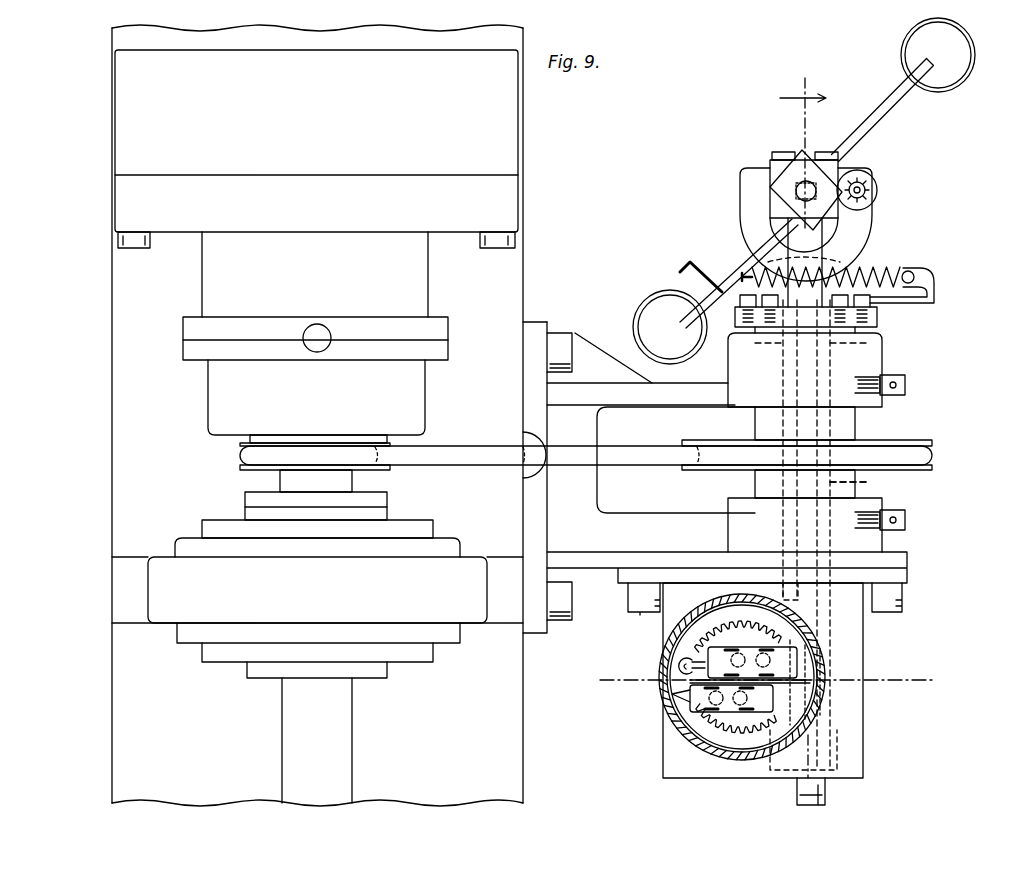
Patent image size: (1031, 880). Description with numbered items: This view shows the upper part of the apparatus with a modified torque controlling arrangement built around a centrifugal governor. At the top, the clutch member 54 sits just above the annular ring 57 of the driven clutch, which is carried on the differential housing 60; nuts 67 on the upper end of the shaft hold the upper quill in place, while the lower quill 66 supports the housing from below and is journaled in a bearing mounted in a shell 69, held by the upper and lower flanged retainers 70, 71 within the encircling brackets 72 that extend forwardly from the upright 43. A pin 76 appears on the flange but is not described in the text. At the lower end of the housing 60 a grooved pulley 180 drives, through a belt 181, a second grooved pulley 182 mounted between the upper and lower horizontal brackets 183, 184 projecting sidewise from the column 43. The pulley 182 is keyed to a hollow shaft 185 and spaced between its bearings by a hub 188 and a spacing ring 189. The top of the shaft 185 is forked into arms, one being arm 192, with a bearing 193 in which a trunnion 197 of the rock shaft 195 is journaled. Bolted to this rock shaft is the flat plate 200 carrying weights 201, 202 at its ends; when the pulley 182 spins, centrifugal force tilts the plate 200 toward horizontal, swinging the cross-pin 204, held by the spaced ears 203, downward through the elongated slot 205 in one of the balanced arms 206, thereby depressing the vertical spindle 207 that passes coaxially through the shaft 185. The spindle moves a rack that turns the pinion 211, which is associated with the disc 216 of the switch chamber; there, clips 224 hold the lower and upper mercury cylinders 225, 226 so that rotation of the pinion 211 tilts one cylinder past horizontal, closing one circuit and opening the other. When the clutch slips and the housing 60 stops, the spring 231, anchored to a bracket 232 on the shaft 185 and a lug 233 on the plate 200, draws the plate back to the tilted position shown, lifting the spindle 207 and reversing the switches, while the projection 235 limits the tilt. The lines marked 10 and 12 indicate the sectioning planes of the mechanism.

The section line 10- 10 is at (762, 680).
The section line 12- 12 is at (803, 417).
The upright 43 is at (122, 103).
The clutch member 54 is at (122, 101).
The annular plate or ring 57 is at (122, 209).
The differential housing 60 is at (425, 401).
The lower quill 66 is at (338, 750).
The nuts 67 is at (428, 287).
The shell 69 is at (317, 590).
The upper flanged retainer 70 is at (210, 524).
The lower flanged retainer 71 is at (258, 678).
The encircling arms or brackets 72 is at (138, 568).
The pin 76 is at (318, 326).
The grooved pulley 180 is at (388, 470).
The belt 181 is at (500, 452).
The grooved pulley 182 is at (930, 468).
The upper horizontal bracket 183 is at (790, 372).
The lower horizontal bracket 184 is at (785, 550).
The hollow shaft 185 is at (862, 483).
The hub 188 is at (855, 423).
The spacing ring 189 is at (757, 483).
The arm 192 is at (822, 258).
The bearing 193 is at (770, 160).
The rock shaft 195 is at (822, 158).
The trunnion 197 is at (796, 150).
The flat wing or plate 200 is at (892, 108).
The weight 201 is at (633, 321).
The weight 202 is at (968, 73).
The spaced ears 203 is at (875, 185).
The cross-pin 204 is at (860, 186).
The horizontally elongated slot 205 is at (866, 192).
The balanced arms 206 is at (740, 193).
The vertical spindle 207 is at (882, 343).
The pinion 211 is at (752, 723).
The disc 216 is at (690, 722).
The clips 224 is at (768, 645).
The lower cylinder 225 is at (680, 692).
The upper cylinder 226 is at (700, 655).
The spring 231 is at (934, 304).
The bracket 232 is at (930, 278).
The lug 233 is at (732, 268).
The bracket or projection 235 is at (680, 270).